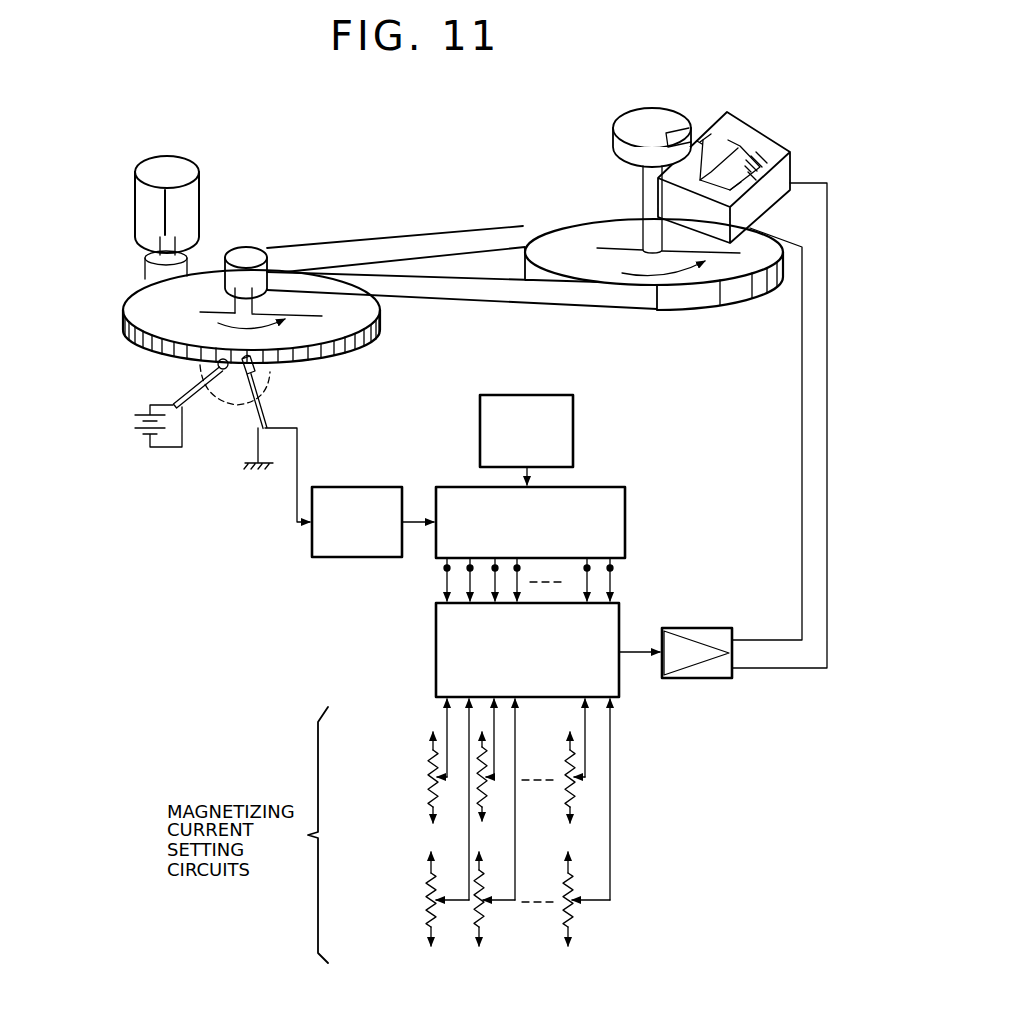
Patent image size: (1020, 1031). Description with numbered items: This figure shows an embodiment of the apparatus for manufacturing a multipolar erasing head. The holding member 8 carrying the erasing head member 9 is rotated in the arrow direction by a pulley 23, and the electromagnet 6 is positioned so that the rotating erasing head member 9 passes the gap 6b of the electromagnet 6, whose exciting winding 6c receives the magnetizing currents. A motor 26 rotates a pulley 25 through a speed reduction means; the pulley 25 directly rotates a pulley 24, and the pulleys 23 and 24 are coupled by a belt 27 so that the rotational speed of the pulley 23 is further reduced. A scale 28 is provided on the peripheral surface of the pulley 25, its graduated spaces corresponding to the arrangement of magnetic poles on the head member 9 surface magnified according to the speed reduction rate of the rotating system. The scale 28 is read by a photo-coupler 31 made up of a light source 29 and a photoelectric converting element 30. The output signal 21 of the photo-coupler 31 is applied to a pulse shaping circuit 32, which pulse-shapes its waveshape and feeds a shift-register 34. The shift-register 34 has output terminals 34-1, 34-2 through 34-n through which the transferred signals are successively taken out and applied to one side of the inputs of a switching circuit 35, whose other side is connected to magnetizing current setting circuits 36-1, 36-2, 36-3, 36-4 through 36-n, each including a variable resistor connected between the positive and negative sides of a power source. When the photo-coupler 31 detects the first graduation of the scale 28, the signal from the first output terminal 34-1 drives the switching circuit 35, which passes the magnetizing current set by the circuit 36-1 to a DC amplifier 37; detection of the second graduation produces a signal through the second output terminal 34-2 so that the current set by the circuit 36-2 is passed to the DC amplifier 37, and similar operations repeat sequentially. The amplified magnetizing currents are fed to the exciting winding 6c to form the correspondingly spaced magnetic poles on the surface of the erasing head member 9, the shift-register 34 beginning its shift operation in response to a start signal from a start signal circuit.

The electromagnet 6 is at (744, 161).
The gap 6b is at (699, 140).
The exciting winding 6c is at (790, 167).
The holding member 8 is at (637, 164).
The erasing head member 9 is at (686, 136).
The output signal 21 is at (300, 458).
The pulley 23 is at (702, 278).
The pulley 24 is at (247, 255).
The pulley 25 is at (236, 322).
The motor 26 is at (200, 184).
The belt 27 is at (414, 239).
The scale 28 is at (158, 346).
The light source 29 is at (216, 362).
The photoelectric converting element 30 is at (256, 366).
The photo-coupler 31 is at (226, 406).
The pulse shaping circuit 32 is at (375, 487).
The shift-register 34 is at (625, 516).
The first output terminal 34-1 is at (446, 568).
The second output terminal 34-2 is at (469, 570).
The n-th output terminal 34-n is at (612, 568).
The switching circuit 35 is at (525, 751).
The magnetizing current setting circuit 36-1 is at (430, 772).
The magnetizing current setting circuit 36-2 is at (427, 890).
The magnetizing current setting circuit 36-3 is at (480, 797).
The magnetizing current setting circuit 36-4 is at (477, 915).
The magnetizing current setting circuit 36-n is at (575, 907).
The DC amplifier 37 is at (573, 433).